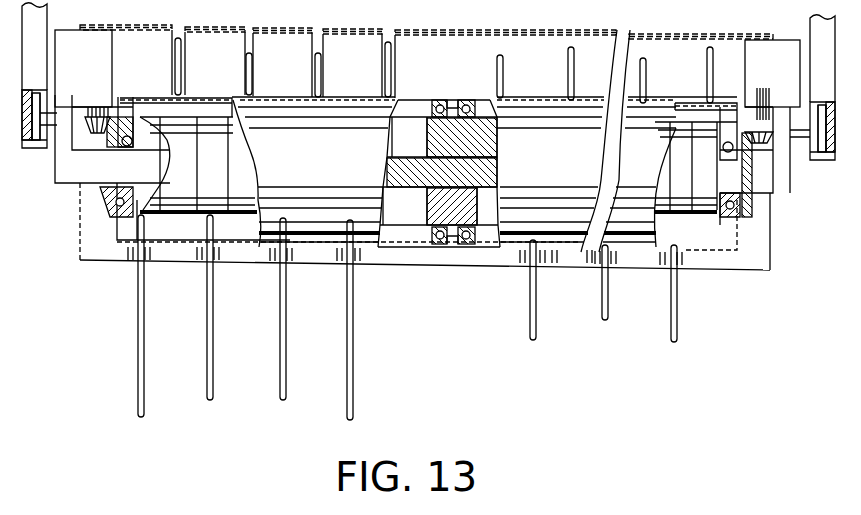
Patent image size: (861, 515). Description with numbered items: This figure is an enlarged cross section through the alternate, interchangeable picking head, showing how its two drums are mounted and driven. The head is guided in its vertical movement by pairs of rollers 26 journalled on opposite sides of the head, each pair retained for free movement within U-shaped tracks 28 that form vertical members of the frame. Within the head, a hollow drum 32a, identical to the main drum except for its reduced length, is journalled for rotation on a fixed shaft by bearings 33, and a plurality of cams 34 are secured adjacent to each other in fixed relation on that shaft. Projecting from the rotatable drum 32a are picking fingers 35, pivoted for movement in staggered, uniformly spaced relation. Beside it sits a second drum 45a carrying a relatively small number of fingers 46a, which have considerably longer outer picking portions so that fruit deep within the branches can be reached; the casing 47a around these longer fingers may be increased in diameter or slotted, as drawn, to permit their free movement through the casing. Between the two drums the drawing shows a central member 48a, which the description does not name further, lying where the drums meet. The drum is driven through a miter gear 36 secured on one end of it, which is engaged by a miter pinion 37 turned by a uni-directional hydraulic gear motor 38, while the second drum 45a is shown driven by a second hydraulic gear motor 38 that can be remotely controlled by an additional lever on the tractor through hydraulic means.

The rollers 26 is at (32, 118).
The U-shaped tracks 28 is at (36, 88).
The drum 32a is at (558, 183).
The bearings 33 is at (128, 136).
The cams 34 is at (192, 161).
The picking fingers 35 is at (568, 70).
The miter gear 36 is at (112, 207).
The miter pinion 37 is at (106, 134).
The hydraulic gear motor 38 is at (92, 72).
The second drum 45a is at (330, 177).
The fingers 46a is at (246, 70).
The casing 47a is at (466, 105).
The hub 48a is at (439, 182).